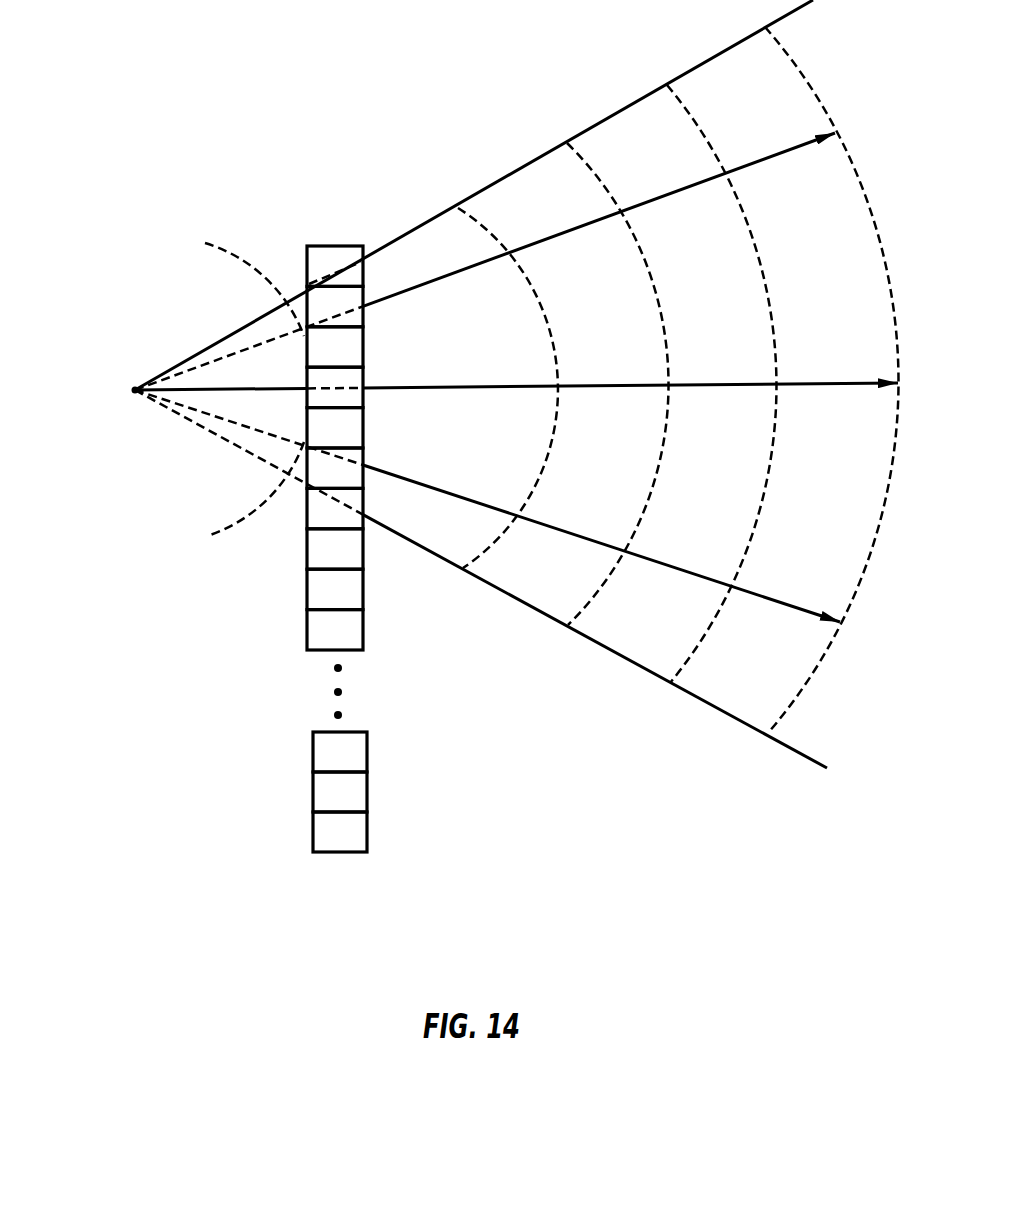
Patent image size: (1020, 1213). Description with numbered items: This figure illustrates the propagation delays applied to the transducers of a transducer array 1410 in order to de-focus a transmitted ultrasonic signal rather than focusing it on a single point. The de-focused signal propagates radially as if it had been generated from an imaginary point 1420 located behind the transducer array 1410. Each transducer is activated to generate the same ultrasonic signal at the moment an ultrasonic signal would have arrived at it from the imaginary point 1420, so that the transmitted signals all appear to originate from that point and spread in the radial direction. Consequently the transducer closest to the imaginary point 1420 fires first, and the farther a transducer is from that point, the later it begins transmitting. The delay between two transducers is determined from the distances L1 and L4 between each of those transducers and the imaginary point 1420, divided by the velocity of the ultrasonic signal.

The transducer array 1410 is at (348, 559).
The imaginary point 1420 is at (135, 390).
The distance L1 is at (221, 340).
The distance L4 is at (200, 392).